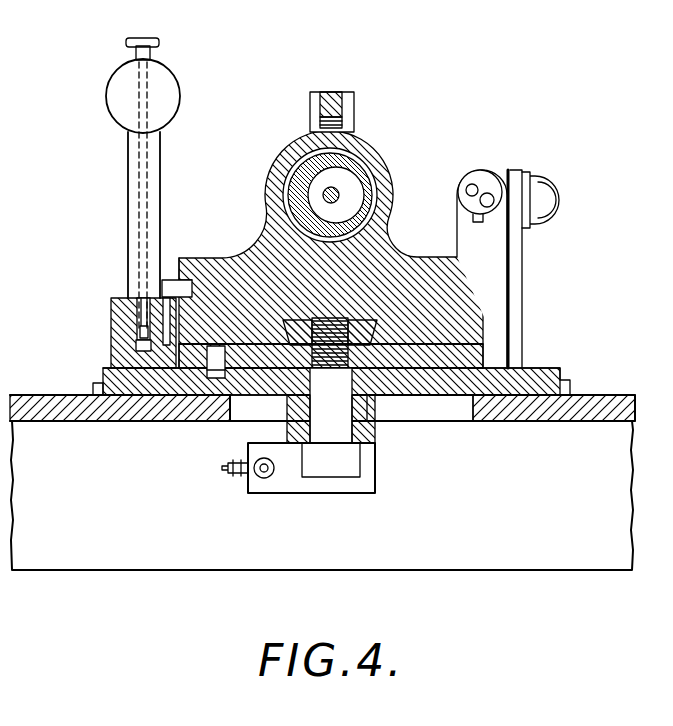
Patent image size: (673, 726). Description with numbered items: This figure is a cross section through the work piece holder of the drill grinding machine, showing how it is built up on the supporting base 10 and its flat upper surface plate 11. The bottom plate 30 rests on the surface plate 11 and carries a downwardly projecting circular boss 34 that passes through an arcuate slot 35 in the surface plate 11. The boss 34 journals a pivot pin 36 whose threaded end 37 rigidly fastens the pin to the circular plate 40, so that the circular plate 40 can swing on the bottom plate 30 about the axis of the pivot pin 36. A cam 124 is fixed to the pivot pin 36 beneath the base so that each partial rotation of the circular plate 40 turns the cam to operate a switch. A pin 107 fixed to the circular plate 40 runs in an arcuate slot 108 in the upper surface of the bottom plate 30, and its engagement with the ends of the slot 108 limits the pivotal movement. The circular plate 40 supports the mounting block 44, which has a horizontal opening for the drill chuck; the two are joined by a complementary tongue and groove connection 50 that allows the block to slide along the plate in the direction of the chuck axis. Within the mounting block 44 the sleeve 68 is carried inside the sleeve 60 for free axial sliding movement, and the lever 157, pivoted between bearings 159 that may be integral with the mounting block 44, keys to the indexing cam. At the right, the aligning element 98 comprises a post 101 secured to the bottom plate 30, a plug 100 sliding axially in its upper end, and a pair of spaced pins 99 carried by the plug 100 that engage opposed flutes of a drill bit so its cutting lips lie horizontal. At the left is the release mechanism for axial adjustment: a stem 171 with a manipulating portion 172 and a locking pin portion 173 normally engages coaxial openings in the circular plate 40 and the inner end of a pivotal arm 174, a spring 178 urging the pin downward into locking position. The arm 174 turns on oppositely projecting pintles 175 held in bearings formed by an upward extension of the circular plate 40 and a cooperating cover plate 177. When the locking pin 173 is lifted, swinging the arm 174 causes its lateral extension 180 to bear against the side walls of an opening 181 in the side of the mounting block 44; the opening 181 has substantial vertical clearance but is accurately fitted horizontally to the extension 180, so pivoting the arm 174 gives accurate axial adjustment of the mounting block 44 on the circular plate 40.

The supporting base 10 is at (322, 495).
The upper surface plate portion 11 is at (600, 408).
The bottom plate 30 is at (557, 372).
The boss 34 is at (370, 412).
The arcuate slot 35 is at (460, 414).
The pivot pin 36 is at (331, 405).
The threaded end 37 is at (365, 333).
The circular plate 40 is at (473, 353).
The mounting block 44 is at (473, 297).
The tongue and groove connection 50 is at (362, 322).
The sleeve 60 is at (352, 160).
The sleeve 68 is at (362, 176).
The aligning element 98 is at (516, 160).
The pins 99 is at (487, 195).
The plug 100 is at (470, 200).
The post 101 is at (518, 258).
The pin 107 is at (217, 363).
The arcuate slot 108 is at (212, 380).
The cam 124 is at (345, 462).
The lever 157 is at (337, 120).
The bearings 159 is at (312, 101).
The stem 171 is at (140, 152).
The manipulating portion 172 is at (126, 43).
The locking pin portion 173 is at (136, 346).
The pivotal arm 174 is at (130, 190).
The pintles 175 is at (112, 305).
The cover plate 177 is at (126, 313).
The spring 178 is at (139, 331).
The lateral extension 180 is at (170, 282).
The opening 181 is at (192, 278).